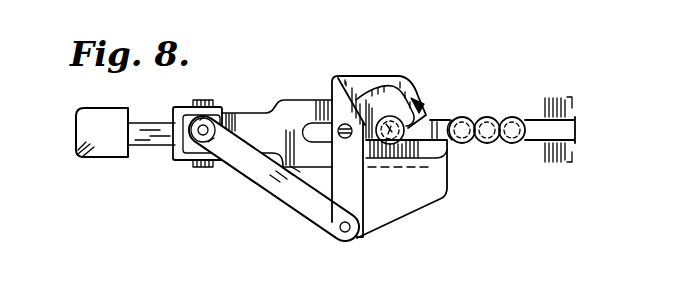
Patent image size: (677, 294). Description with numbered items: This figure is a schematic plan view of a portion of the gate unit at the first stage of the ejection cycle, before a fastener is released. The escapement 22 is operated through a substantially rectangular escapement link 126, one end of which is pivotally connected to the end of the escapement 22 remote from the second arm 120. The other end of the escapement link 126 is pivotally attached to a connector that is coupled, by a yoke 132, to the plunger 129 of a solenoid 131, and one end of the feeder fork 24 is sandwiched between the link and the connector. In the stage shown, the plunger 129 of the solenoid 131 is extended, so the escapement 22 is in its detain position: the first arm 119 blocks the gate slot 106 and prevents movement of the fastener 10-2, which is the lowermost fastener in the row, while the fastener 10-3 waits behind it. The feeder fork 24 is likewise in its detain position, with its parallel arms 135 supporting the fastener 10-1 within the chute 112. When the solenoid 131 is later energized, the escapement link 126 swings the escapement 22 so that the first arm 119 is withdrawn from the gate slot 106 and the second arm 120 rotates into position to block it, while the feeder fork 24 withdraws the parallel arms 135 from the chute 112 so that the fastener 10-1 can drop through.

The solenoid 131 is at (92, 158).
The plunger 129 is at (157, 145).
The yoke 132 is at (180, 99).
The feeder fork 24 is at (244, 112).
The parallel arms 135 is at (315, 99).
The escapement link 126 is at (297, 197).
The escapement 22 is at (344, 77).
The second arm 120 is at (404, 76).
The chute 112 is at (420, 117).
The fastener 10-1 is at (420, 101).
The fastener 10-2 is at (467, 118).
The fastener 10-3 is at (496, 141).
The gate slot 106 is at (547, 128).
The first arm 119 is at (443, 170).